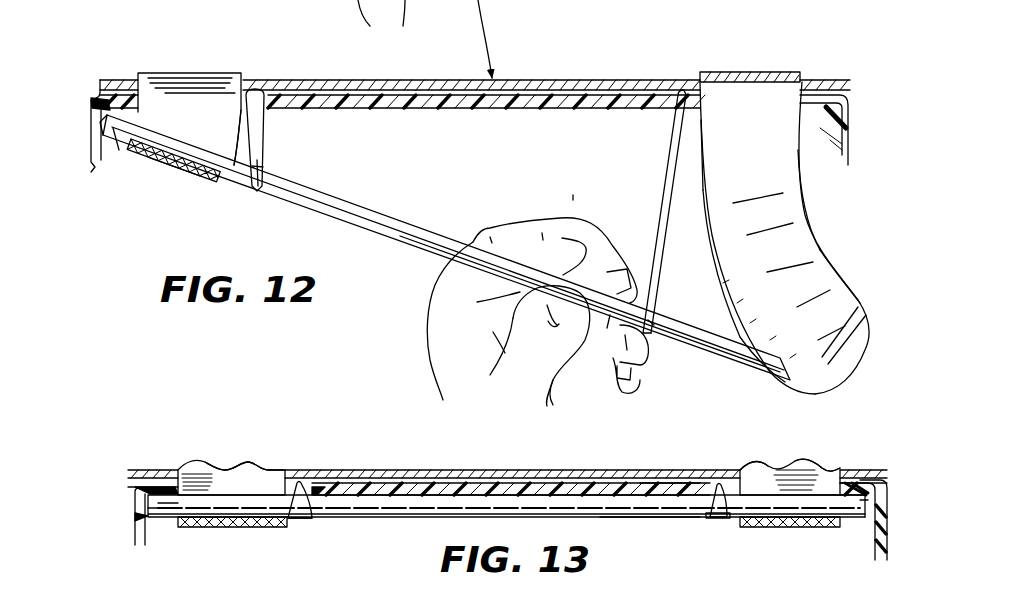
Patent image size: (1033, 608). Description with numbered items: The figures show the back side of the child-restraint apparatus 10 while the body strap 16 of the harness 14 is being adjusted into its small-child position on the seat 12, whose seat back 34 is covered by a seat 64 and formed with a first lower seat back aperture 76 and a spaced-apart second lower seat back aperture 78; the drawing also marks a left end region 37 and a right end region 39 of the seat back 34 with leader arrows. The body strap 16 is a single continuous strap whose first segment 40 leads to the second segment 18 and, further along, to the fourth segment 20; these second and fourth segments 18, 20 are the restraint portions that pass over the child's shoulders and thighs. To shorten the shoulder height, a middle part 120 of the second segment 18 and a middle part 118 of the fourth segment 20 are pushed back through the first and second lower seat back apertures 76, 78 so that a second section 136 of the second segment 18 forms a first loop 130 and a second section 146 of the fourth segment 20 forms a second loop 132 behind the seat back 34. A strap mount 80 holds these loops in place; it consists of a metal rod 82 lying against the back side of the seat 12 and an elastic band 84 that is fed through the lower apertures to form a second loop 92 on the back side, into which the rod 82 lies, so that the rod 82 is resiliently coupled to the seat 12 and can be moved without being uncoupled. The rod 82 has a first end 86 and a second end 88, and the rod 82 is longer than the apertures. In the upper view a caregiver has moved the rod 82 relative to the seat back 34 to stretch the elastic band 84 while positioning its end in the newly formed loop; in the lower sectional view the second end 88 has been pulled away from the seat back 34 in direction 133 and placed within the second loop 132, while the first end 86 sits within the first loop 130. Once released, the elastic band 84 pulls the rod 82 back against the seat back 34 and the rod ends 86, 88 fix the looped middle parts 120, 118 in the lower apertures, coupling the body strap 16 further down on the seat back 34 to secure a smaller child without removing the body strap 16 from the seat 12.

In FIG. 12, the child-restraint apparatus 10 is at (632, 50).
In FIG. 12, the seat 12 is at (567, 78).
In FIG. 13, the seat 12 is at (567, 467).
In FIG. 12, the harness 14 is at (818, 198).
In FIG. 13, the harness 14 is at (279, 463).
In FIG. 12, the body strap 16 is at (700, 152).
In FIG. 13, the body strap 16 is at (781, 451).
In FIG. 12, the second segment 18 is at (196, 76).
In FIG. 13, the second segment 18 is at (213, 458).
In FIG. 12, the fourth segment 20 is at (757, 72).
In FIG. 13, the fourth segment 20 is at (763, 463).
In FIG. 13, the seat back 34 is at (415, 468).
In FIG. 12, the left end cap 37 is at (80, 86).
In FIG. 13, the left end cap 37 is at (133, 455).
In FIG. 12, the right end cap 39 is at (826, 63).
In FIG. 13, the right end cap 39 is at (812, 440).
In FIG. 12, the first segment 40 is at (265, 164).
In FIG. 13, the first segment 40 is at (298, 519).
In FIG. 12, the seat 64 is at (405, 88).
In FIG. 13, the seat 64 is at (608, 474).
In FIG. 12, the first lower seat back aperture 76 is at (252, 80).
In FIG. 13, the first lower seat back aperture 76 is at (293, 470).
In FIG. 12, the second lower seat back aperture 78 is at (692, 78).
In FIG. 13, the second lower seat back aperture 78 is at (733, 472).
In FIG. 12, the strap mount 80 is at (310, 215).
In FIG. 13, the strap mount 80 is at (340, 534).
In FIG. 13, the rod 82 is at (648, 512).
In FIG. 12, the band 84 is at (268, 133).
In FIG. 13, the band 84 is at (642, 480).
In FIG. 12, the first end 86 is at (127, 137).
In FIG. 13, the first end 86 is at (167, 510).
In FIG. 12, the second end 88 is at (407, 240).
In FIG. 13, the second end 88 is at (857, 508).
In FIG. 12, the second loop 92 is at (665, 198).
In FIG. 13, the second loop 92 is at (715, 519).
In FIG. 12, the middle part 118 is at (814, 240).
In FIG. 13, the middle part 118 is at (824, 460).
In FIG. 12, the middle part 120 is at (243, 124).
In FIG. 13, the middle part 120 is at (243, 461).
In FIG. 12, the first loop 130 is at (170, 167).
In FIG. 13, the first loop 130 is at (235, 527).
In FIG. 12, the second loop 132 is at (838, 267).
In FIG. 13, the second loop 132 is at (787, 523).
In FIG. 12, the direction 133 is at (573, 200).
In FIG. 12, the second section 136 is at (204, 180).
In FIG. 13, the second section 136 is at (201, 527).
In FIG. 12, the second section 146 is at (862, 303).
In FIG. 13, the second section 146 is at (757, 523).